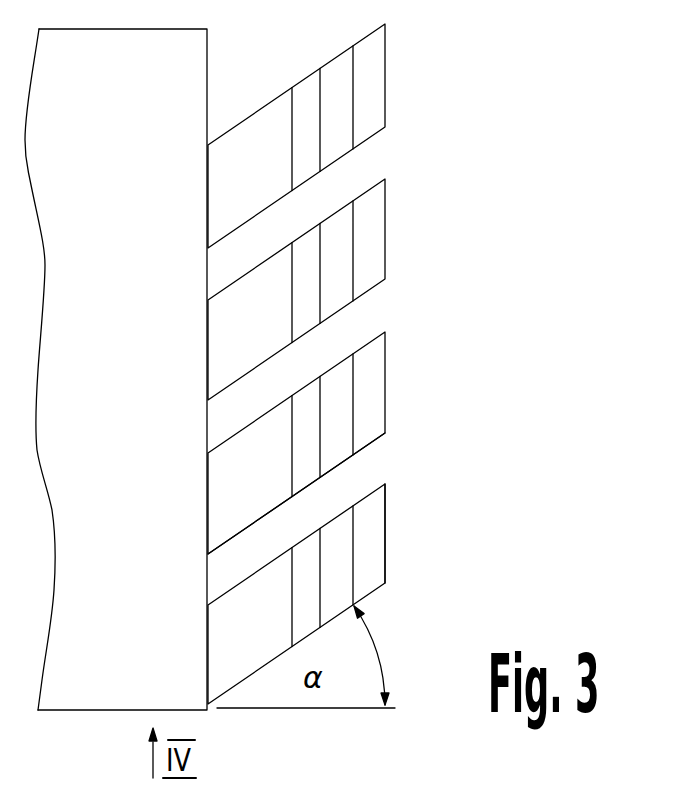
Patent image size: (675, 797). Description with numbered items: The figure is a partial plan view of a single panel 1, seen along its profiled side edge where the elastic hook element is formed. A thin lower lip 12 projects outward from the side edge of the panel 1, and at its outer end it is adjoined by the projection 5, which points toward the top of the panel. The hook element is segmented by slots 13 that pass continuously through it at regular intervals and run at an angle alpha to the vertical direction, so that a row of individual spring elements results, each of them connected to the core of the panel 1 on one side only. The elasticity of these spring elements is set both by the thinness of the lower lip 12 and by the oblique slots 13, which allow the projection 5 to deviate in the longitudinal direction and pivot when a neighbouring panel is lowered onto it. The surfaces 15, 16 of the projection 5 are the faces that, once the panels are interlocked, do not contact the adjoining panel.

The panel 1 is at (116, 369).
The lower lip 12 is at (296, 364).
The surface of the projection 15 is at (322, 97).
The slot 13 is at (412, 132).
The surface of the projection 16 is at (383, 471).
The projection 5 is at (380, 610).